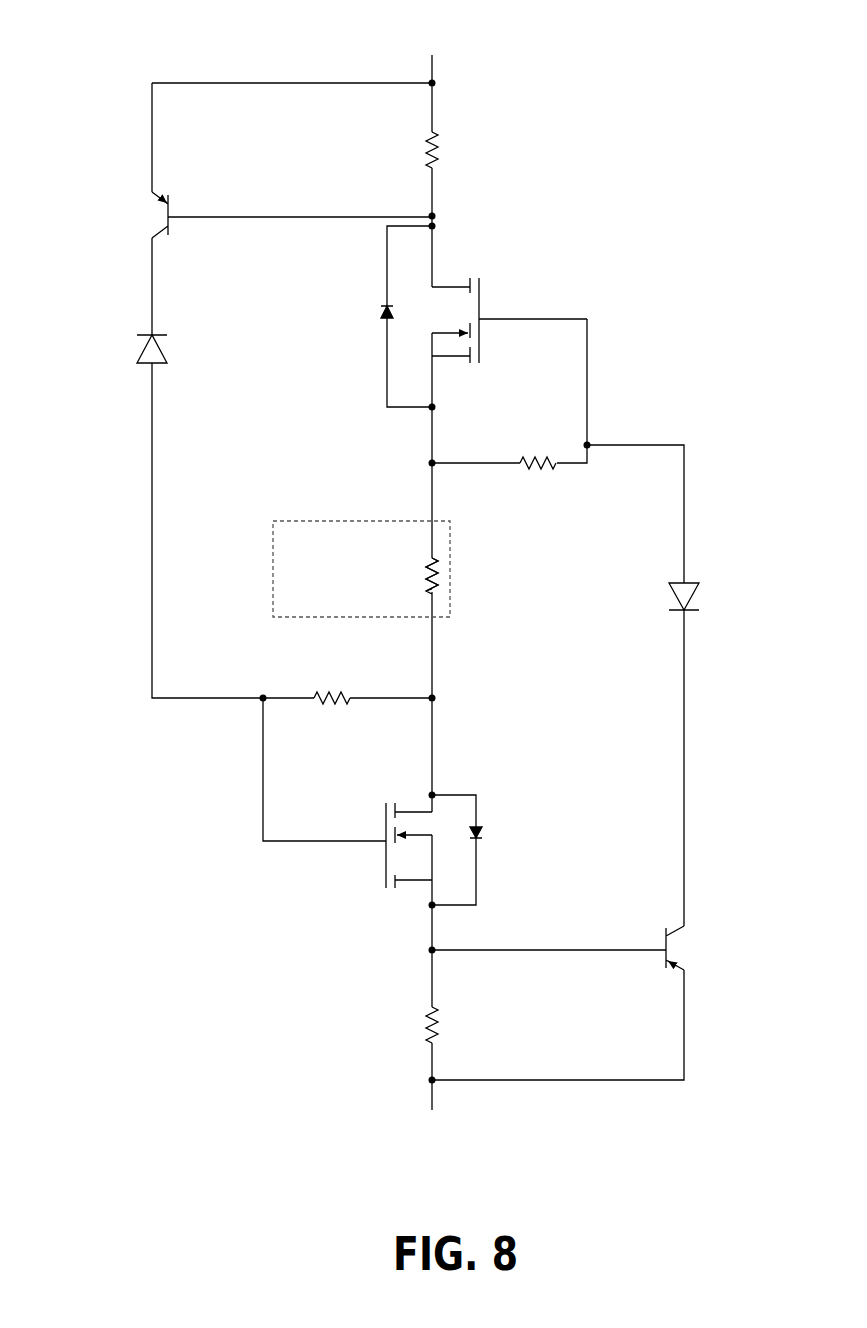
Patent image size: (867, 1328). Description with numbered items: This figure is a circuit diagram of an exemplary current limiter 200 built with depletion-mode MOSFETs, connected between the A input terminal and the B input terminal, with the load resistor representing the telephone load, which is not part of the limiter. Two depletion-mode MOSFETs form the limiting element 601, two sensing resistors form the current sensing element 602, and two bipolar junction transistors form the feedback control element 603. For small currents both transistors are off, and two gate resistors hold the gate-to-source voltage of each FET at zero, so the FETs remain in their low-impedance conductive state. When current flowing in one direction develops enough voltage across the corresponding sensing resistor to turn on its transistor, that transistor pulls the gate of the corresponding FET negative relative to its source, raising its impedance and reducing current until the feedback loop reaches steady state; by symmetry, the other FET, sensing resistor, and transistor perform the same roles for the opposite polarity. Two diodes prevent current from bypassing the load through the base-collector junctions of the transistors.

The current limiter 200 is at (658, 90).
The limiting element 601 is at (494, 290).
The current sensing element 602 is at (456, 170).
The feedback control element 603 is at (91, 221).